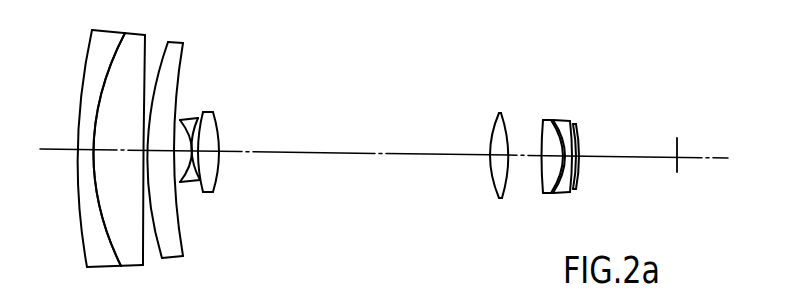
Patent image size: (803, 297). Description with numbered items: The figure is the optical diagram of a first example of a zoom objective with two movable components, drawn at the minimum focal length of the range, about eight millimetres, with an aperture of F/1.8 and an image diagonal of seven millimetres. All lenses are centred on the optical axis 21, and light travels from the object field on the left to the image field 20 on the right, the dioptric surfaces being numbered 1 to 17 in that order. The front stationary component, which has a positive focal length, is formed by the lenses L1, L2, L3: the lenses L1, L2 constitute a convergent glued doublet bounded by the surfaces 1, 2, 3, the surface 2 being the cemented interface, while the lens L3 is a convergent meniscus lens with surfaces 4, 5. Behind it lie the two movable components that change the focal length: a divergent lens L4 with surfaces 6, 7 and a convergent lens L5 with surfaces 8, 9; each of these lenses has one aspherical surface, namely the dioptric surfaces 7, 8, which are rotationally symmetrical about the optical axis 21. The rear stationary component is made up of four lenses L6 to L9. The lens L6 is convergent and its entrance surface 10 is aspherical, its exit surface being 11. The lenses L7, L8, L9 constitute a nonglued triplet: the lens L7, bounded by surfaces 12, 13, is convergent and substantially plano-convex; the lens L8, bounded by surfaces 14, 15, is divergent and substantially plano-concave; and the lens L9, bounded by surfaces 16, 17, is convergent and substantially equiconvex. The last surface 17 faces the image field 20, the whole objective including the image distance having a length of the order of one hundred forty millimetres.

The lens L1 is at (92, 147).
The lens L2 is at (101, 164).
The convergent meniscus lens L3 is at (184, 168).
The divergent lens L4 is at (211, 149).
The convergent lens L5 is at (242, 144).
The convergent lens L6 is at (476, 145).
The convergent plano-convex lens L7 is at (541, 146).
The divergent plano-concave lens L8 is at (586, 136).
The convergent equiconvex lens L9 is at (606, 122).
The dioptric surface 1 is at (83, 230).
The dioptric surface 2 is at (110, 247).
The dioptric surface 3 is at (143, 247).
The dioptric surface 4 is at (163, 258).
The dioptric surface 5 is at (181, 238).
The dioptric surface 6 is at (190, 182).
The aspherical dioptric surface 7 is at (198, 181).
The aspherical dioptric surface 8 is at (203, 164).
The dioptric surface 9 is at (218, 158).
The aspherical entrance surface 10 is at (492, 178).
The dioptric surface 11 is at (507, 193).
The dioptric surface 12 is at (538, 178).
The dioptric surface 13 is at (544, 197).
The dioptric surface 14 is at (562, 183).
The dioptric surface 15 is at (576, 168).
The dioptric surface 16 is at (580, 163).
The dioptric surface 17 is at (578, 150).
The image field 20 is at (681, 146).
The optical axis 21 is at (355, 151).